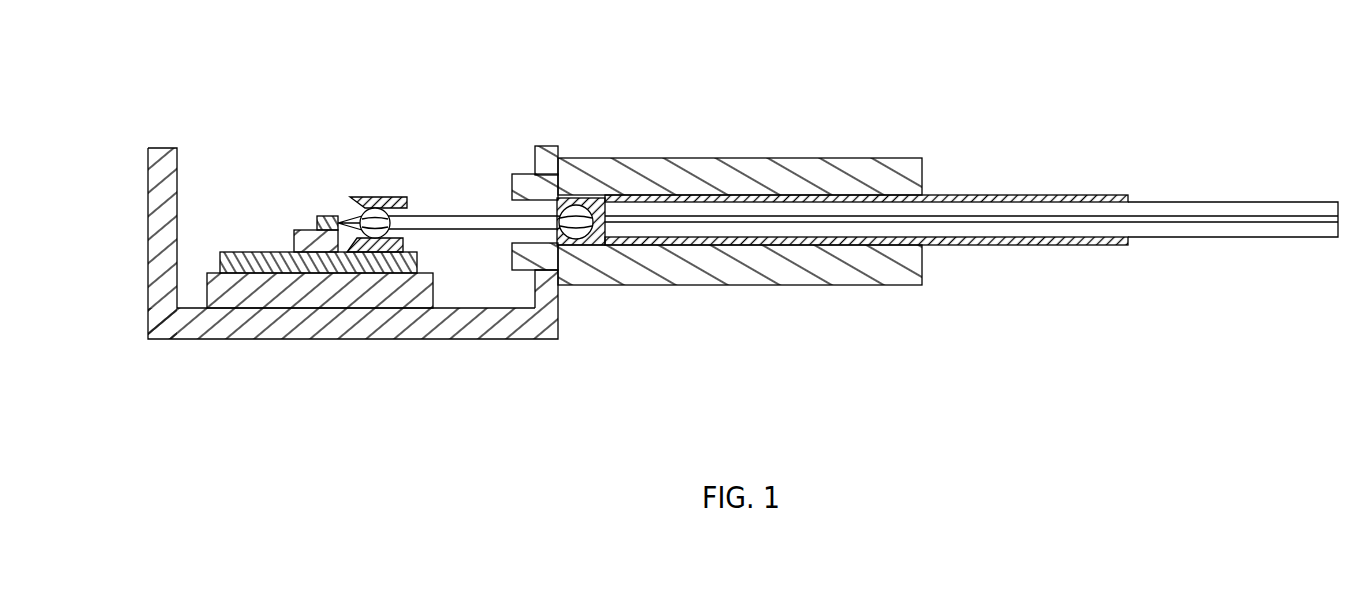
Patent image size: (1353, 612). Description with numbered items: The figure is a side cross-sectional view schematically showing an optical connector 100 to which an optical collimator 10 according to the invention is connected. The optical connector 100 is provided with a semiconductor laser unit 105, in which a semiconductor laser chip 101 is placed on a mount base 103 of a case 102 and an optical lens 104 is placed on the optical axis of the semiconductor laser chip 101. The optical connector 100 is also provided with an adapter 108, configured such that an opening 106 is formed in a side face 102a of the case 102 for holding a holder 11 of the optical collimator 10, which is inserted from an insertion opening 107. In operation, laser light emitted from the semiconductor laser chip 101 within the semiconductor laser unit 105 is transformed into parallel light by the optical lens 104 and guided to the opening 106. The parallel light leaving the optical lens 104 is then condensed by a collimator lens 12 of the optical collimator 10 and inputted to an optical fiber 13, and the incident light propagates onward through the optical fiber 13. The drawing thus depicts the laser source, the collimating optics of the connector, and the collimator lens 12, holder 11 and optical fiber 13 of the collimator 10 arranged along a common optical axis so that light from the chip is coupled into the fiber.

The optical connector 100 is at (205, 98).
The semiconductor laser chip 101 is at (328, 216).
The case 102 is at (148, 196).
The side face 102a is at (560, 309).
The mount base 103 is at (293, 242).
The optical lens 104 is at (372, 208).
The semiconductor laser unit 105 is at (245, 340).
The opening 106 is at (515, 208).
The insertion opening 107 is at (943, 168).
The adapter 108 is at (755, 158).
The optical collimator 10 is at (1054, 153).
The holder 11 is at (997, 248).
The collimator lens 12 is at (577, 199).
The optical fiber 13 is at (1222, 200).